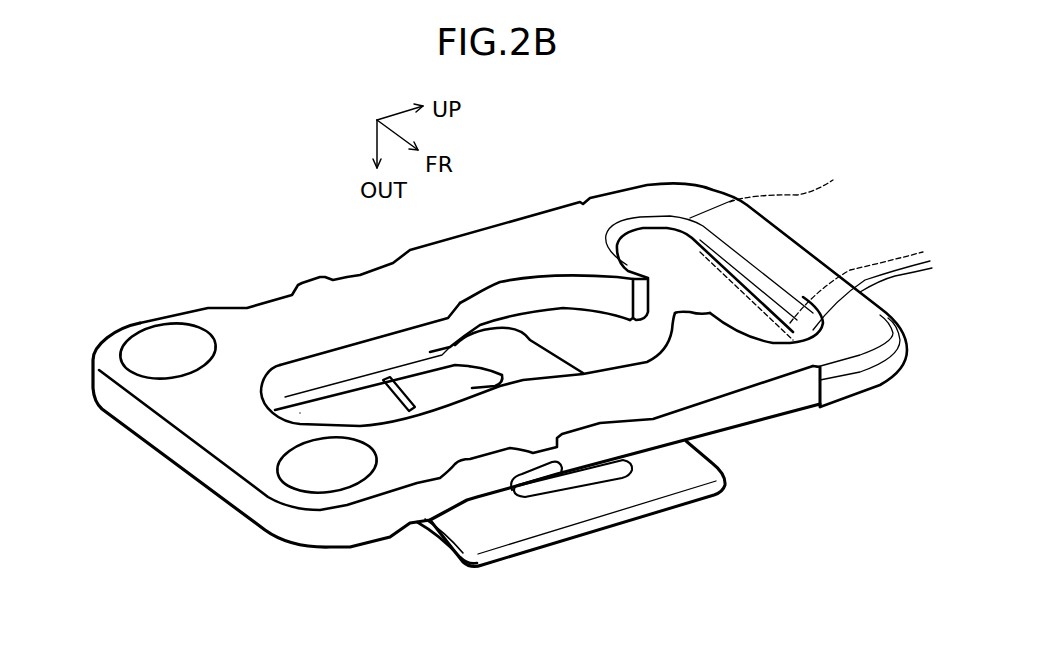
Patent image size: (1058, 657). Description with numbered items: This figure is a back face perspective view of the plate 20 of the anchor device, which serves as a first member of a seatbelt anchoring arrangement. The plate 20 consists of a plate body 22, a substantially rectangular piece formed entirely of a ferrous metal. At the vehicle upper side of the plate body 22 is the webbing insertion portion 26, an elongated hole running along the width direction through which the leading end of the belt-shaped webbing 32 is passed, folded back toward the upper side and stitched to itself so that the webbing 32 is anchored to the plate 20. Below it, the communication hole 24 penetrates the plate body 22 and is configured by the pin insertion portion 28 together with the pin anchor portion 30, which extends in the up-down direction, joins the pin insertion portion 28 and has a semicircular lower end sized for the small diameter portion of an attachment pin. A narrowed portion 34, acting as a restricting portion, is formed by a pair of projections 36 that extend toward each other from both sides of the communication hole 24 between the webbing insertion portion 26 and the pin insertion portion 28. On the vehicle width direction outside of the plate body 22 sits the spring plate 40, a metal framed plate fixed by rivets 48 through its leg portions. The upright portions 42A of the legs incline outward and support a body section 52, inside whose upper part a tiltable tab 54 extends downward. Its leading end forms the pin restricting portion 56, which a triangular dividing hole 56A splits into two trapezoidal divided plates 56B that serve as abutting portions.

The plate 20 is at (225, 250).
The plate body 22 is at (713, 180).
The communication hole 24 is at (582, 297).
The webbing insertion portion 26 is at (662, 248).
The pin insertion portion 28 is at (537, 297).
The pin anchor portion 30 is at (310, 380).
The webbing 32 is at (813, 188).
The narrowed portion 34 is at (803, 450).
The projections 36 is at (613, 280).
The spring plate 40 is at (728, 488).
The upright portions 42A is at (423, 533).
The rivets 48 is at (172, 342).
The body section 52 is at (672, 510).
The tiltable tab 54 is at (560, 480).
The pin restricting portion 56 is at (387, 383).
The dividing hole 56A is at (423, 397).
The divided plates 56B is at (407, 367).